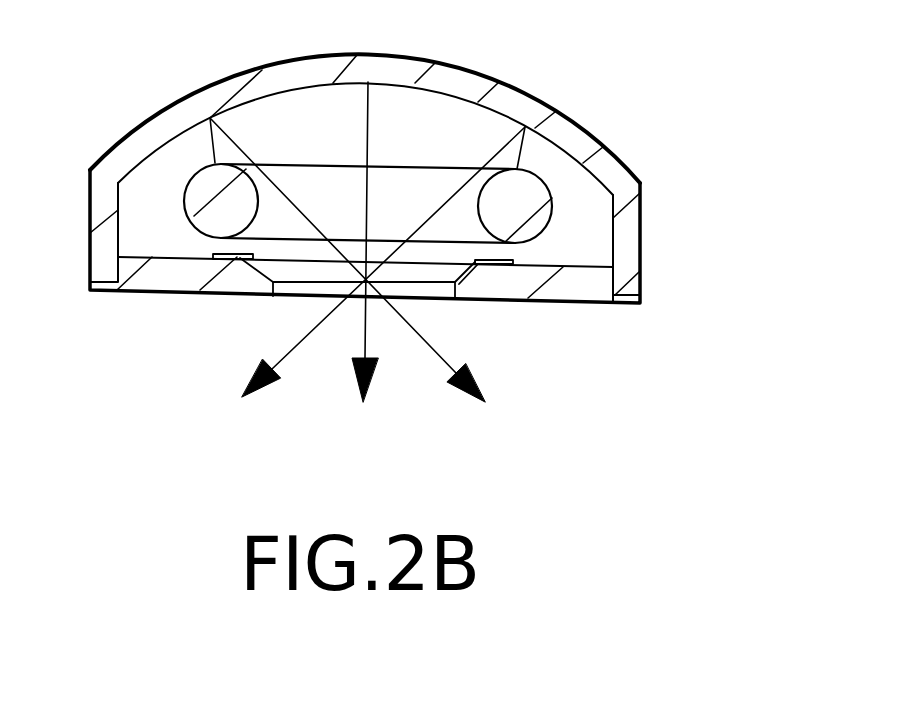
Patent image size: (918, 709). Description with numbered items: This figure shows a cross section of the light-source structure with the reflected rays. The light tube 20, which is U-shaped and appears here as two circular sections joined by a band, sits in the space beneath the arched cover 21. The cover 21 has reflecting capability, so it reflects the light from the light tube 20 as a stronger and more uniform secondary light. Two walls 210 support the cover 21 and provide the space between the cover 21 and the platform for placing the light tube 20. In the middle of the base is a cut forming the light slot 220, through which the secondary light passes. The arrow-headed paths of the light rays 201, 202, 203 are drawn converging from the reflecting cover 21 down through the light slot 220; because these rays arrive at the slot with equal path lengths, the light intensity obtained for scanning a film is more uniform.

The light tube 20 is at (207, 188).
The cover 21 is at (464, 81).
The walls 210 is at (631, 241).
The light slot 220 is at (438, 288).
The light ray 201 is at (351, 283).
The light ray 202 is at (362, 262).
The light ray 203 is at (368, 282).